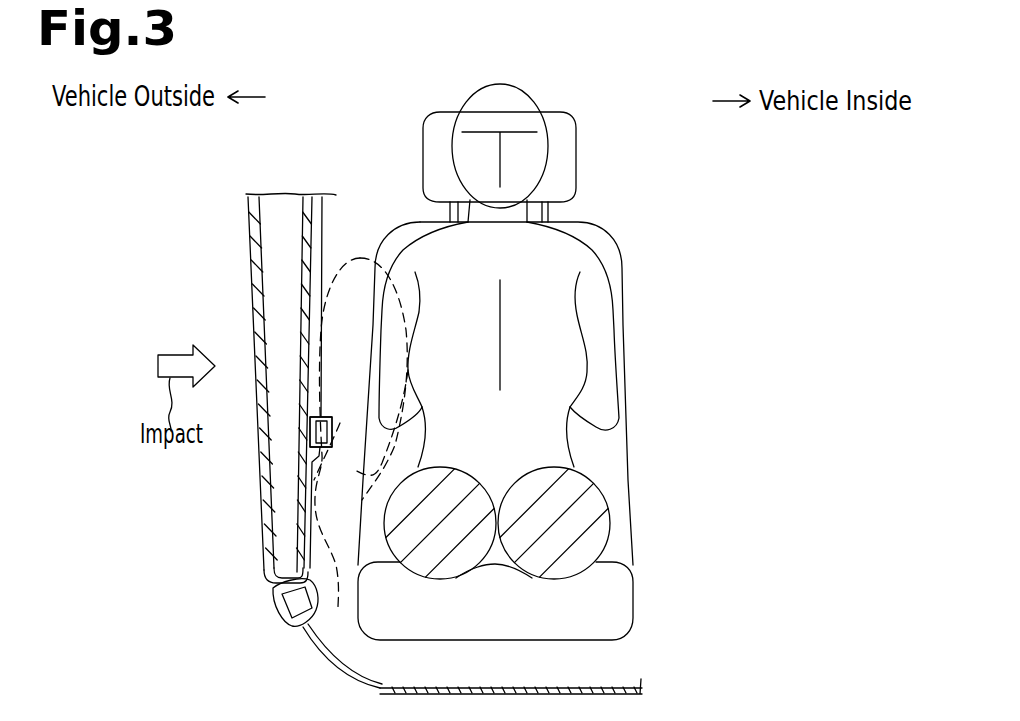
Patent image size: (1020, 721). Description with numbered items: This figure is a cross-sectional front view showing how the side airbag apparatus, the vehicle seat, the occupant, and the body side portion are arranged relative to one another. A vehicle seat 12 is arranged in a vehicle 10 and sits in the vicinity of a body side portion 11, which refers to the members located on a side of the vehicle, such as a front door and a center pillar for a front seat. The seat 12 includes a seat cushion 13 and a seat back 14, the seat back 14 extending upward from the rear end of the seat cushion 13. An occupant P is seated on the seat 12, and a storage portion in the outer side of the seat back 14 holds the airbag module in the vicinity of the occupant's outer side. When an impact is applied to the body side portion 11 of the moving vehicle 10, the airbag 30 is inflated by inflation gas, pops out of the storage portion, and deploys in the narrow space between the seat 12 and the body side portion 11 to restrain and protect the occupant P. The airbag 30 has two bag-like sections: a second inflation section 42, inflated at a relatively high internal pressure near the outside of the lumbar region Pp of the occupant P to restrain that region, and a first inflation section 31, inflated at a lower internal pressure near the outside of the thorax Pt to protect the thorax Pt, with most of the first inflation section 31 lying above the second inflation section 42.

The vehicle 10 is at (148, 257).
The body side portion 11 is at (248, 314).
The vehicle seat 12 is at (677, 511).
The seat cushion 13 is at (625, 593).
The seat back 14 is at (626, 397).
The airbag 30 is at (321, 432).
The first inflation section 31 is at (452, 446).
The second inflation section 42 is at (327, 633).
The occupant P is at (630, 230).
The thorax Pt is at (578, 334).
The lumbar region Pp is at (578, 466).